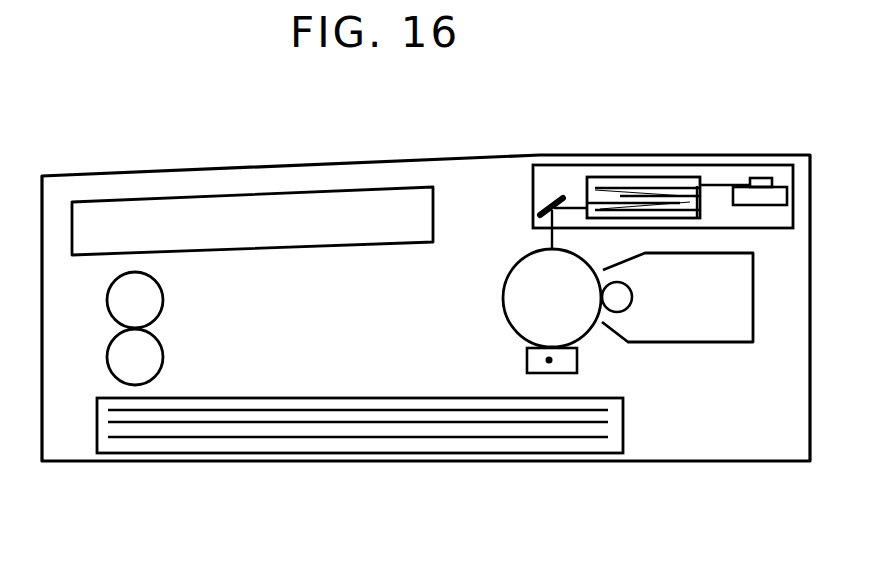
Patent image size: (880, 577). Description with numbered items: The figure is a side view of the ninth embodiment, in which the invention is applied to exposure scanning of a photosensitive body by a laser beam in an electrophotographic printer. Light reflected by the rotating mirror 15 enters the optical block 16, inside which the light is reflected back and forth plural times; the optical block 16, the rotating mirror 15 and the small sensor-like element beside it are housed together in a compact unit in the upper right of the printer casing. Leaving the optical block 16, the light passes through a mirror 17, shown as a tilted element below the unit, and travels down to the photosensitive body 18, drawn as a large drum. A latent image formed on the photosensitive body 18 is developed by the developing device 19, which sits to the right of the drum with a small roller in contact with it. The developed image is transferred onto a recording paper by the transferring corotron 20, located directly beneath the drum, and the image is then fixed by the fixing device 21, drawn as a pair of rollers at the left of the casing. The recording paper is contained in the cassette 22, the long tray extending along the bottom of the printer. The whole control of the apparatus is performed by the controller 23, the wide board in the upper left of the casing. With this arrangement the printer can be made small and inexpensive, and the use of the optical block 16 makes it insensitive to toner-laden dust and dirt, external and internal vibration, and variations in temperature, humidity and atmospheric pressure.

The rotating mirror 15 is at (778, 182).
The optical block 16 is at (653, 177).
The mirror 17 is at (557, 203).
The photosensitive body 18 is at (594, 326).
The developing device 19 is at (753, 343).
The transferring corotron 20 is at (527, 373).
The fixing device 21 is at (112, 373).
The cassette 22 is at (312, 455).
The controller 23 is at (176, 198).